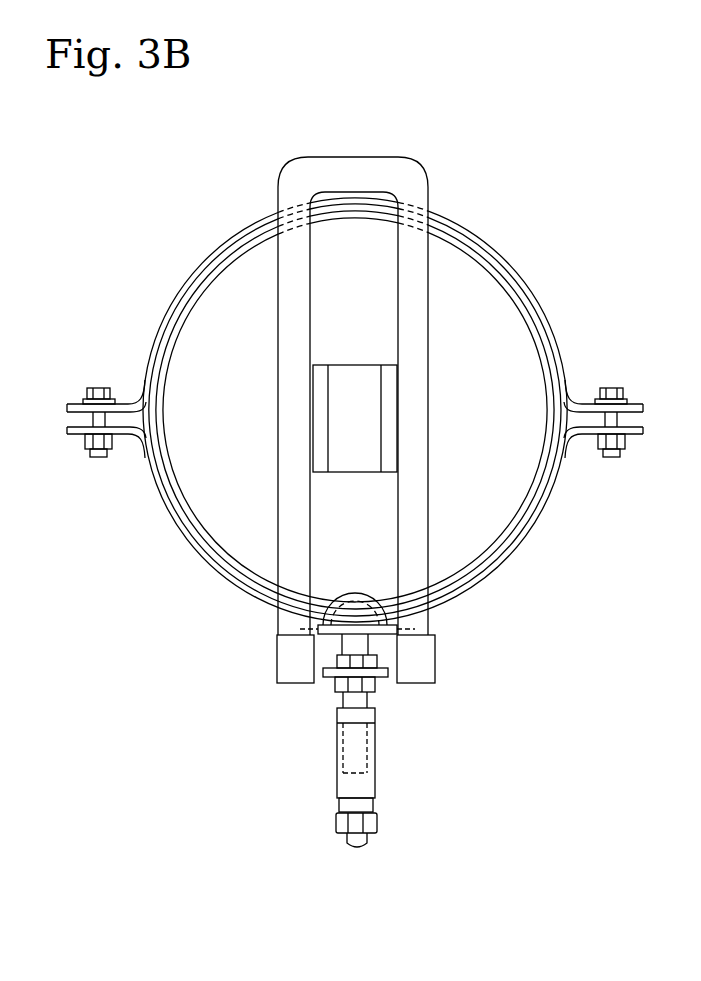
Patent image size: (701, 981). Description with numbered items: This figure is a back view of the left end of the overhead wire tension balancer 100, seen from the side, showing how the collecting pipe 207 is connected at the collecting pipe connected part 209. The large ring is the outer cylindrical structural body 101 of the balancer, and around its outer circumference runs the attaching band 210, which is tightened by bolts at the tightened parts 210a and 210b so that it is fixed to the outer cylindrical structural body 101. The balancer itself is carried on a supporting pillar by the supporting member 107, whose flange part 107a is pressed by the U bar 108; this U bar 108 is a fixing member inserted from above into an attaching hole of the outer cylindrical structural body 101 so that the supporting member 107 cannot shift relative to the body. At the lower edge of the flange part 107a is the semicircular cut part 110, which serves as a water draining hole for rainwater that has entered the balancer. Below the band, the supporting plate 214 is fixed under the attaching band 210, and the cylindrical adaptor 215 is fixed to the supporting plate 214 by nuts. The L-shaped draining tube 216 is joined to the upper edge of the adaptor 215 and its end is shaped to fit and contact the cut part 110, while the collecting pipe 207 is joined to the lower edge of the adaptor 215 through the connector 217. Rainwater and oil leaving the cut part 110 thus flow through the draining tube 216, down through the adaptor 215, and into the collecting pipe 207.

The overhead wire tension balancer 100 is at (183, 257).
The outer cylindrical structural body 101 is at (183, 527).
The supporting member 107 is at (390, 383).
The flange part 107a is at (487, 318).
The U bar 108 is at (403, 182).
The cut part 110 is at (400, 630).
The collecting pipe 207 is at (360, 842).
The collecting pipe connected part 209 is at (322, 700).
The attaching band 210 is at (220, 592).
The tightened part 210a is at (78, 383).
The tightened part 210b is at (636, 452).
The supporting plate 214 is at (388, 672).
The adaptor 215 is at (357, 745).
The draining tube 216 is at (372, 596).
The connector 217 is at (335, 823).